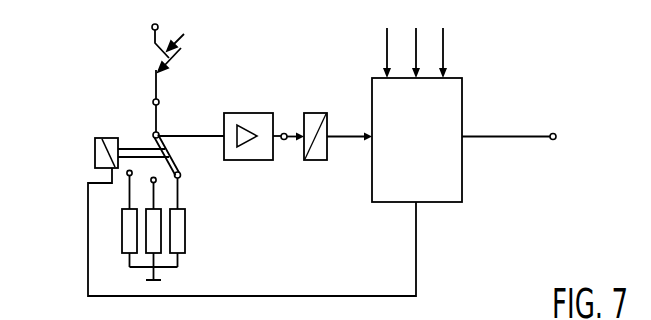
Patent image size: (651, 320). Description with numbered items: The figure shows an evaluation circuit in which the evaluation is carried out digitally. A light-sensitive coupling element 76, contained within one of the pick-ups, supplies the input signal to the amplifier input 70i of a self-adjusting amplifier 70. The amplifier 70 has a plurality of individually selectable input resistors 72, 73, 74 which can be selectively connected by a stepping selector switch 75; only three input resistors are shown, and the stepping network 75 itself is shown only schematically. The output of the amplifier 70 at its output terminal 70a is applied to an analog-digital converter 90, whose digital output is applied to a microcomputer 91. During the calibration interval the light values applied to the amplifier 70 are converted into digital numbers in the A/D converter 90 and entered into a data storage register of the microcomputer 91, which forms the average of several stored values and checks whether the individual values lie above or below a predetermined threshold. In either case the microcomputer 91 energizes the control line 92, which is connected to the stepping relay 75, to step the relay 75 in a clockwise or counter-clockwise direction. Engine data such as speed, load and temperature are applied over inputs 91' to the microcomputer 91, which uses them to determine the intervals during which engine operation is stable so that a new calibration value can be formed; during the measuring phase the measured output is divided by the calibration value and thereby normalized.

The self-adjusting amplifier 70 is at (262, 118).
The output terminal 70a is at (286, 143).
The amplifier input 70i is at (160, 101).
The input resistor 72 is at (178, 223).
The input resistor 73 is at (155, 242).
The input resistor 74 is at (130, 242).
The stepping selector switch 75 is at (101, 154).
The light-sensitive coupling element 76 is at (163, 58).
The analog-digital converter 90 is at (317, 113).
The microcomputer 91 is at (464, 140).
The inputs 91' is at (443, 42).
The output line 92 is at (417, 246).